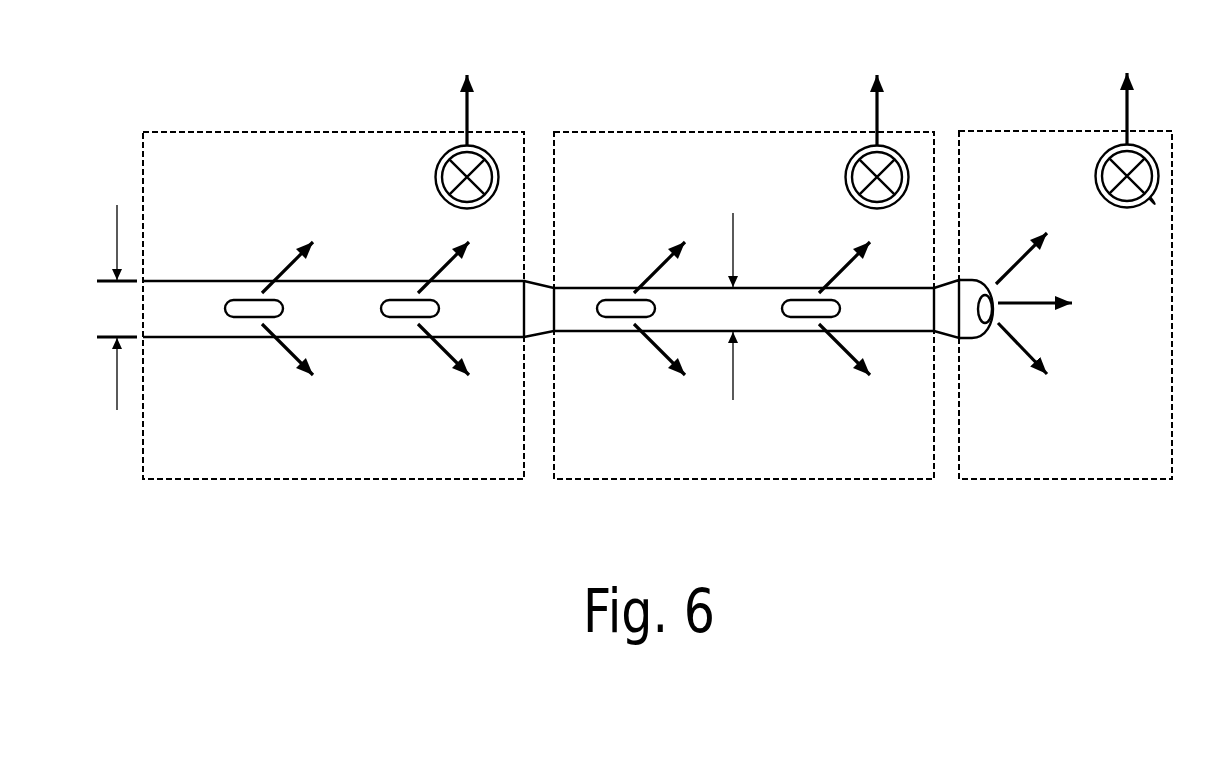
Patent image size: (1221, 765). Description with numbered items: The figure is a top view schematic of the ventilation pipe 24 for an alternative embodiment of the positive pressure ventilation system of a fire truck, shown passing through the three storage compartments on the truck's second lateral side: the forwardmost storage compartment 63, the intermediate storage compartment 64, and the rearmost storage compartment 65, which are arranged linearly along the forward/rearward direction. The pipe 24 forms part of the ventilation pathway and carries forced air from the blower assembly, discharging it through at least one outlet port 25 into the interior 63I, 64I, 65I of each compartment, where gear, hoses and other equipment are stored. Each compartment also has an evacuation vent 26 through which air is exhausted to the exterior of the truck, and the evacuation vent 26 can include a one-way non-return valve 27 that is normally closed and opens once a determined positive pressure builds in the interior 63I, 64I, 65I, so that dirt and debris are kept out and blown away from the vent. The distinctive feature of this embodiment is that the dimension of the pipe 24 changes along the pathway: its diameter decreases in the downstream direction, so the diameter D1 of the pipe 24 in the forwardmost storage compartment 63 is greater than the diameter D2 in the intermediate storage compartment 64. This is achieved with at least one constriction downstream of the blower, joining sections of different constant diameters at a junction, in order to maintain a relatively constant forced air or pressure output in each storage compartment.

The pipe 24 is at (185, 338).
The outlet port 25 is at (237, 300).
The evacuation vent 26 is at (1149, 155).
The non-return valve 27 is at (1150, 196).
The forwardmost storage compartment 63 is at (325, 131).
The intermediate storage compartment 64 is at (710, 131).
The rearmost storage compartment 65 is at (990, 130).
The interior of the forwardmost storage compartment 63I is at (355, 450).
The interior of the intermediate storage compartment 64I is at (678, 450).
The interior of the rearmost storage compartment 65I is at (1088, 450).
The diameter of the pipe in the forwardmost storage compartment D1 is at (117, 322).
The diameter of the pipe in the intermediate storage compartment D2 is at (735, 322).